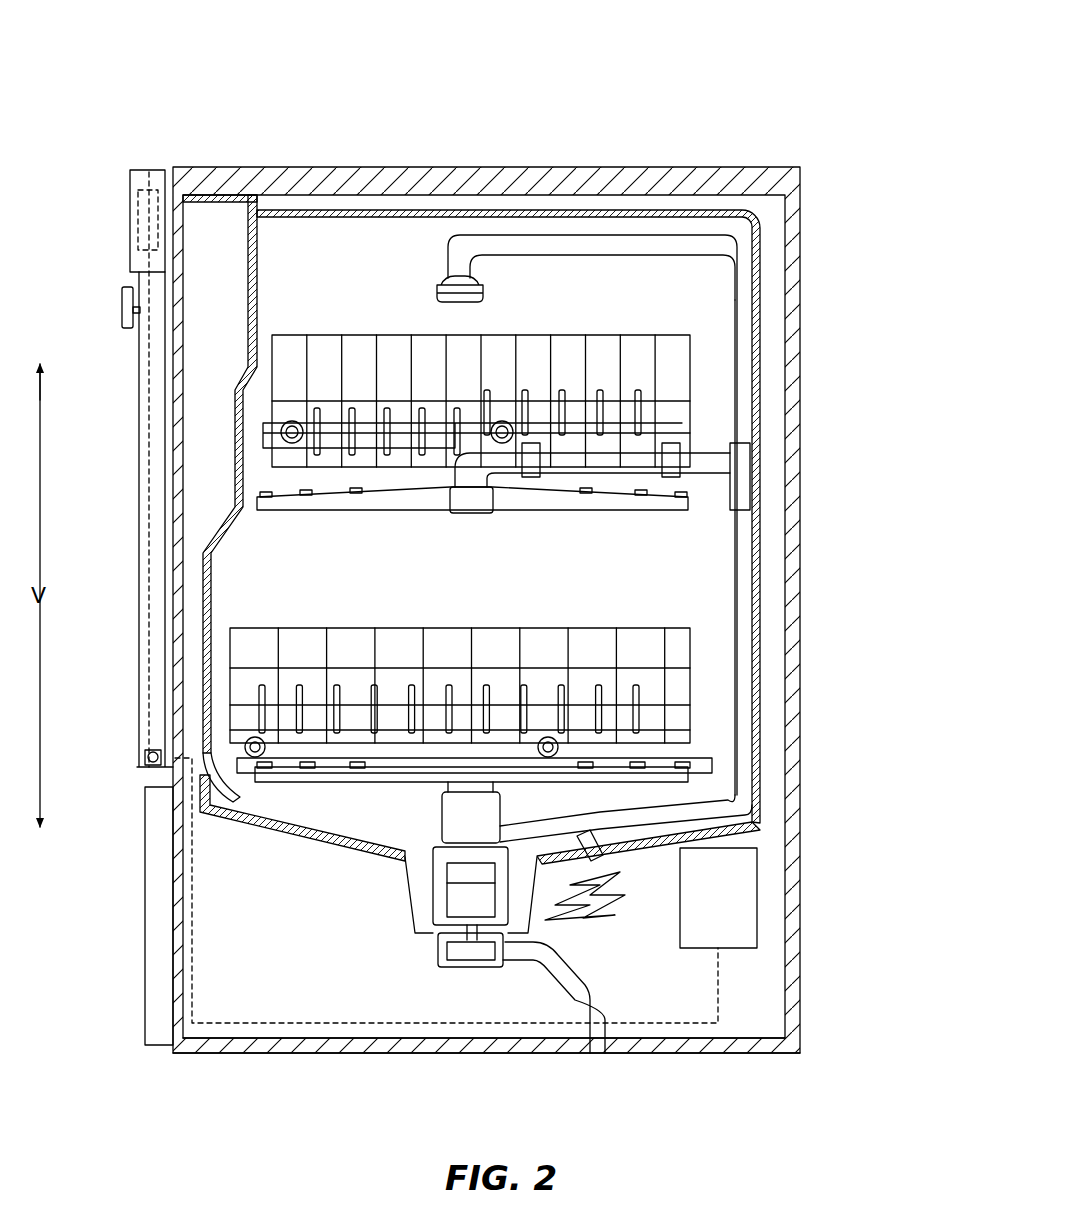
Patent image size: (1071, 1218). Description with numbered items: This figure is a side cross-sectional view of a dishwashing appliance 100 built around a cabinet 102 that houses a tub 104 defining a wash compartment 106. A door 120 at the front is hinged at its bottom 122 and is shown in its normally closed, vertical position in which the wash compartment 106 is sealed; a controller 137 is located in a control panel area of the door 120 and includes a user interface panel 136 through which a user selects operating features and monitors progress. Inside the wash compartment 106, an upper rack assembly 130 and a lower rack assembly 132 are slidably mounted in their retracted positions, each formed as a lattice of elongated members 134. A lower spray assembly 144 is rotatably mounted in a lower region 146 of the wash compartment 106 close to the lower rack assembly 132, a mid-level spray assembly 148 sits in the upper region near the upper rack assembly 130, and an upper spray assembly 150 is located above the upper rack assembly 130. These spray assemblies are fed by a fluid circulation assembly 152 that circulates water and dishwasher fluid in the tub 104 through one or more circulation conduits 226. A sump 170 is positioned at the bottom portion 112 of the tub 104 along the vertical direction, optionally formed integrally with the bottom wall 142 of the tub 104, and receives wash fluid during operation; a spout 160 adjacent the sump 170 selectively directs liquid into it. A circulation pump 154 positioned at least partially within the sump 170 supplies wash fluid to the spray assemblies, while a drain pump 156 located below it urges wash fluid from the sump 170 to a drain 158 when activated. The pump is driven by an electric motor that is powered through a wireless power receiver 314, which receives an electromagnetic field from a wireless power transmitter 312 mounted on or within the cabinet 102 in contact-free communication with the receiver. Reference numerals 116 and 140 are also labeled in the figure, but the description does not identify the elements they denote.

The dishwashing appliance 100 is at (474, 601).
The cabinet 102 is at (646, 90).
The tub 104 is at (765, 580).
The wash compartment 106 is at (254, 575).
The bottom portion 112 is at (258, 915).
The bottom of cabinet 116 is at (791, 1072).
The door 120 is at (140, 650).
The bottom of door 122 is at (165, 760).
The rack assembly 130 is at (330, 316).
The rack assembly 132 is at (533, 627).
The elongated members 134 is at (360, 395).
The user interface panel 136 is at (120, 298).
The controller 137 is at (132, 207).
The sump portion 140 is at (311, 1030).
The bottom wall 142 is at (712, 847).
The lower spray assembly 144 is at (343, 775).
The lower region 146 is at (720, 797).
The mid-level spray assembly 148 is at (505, 510).
The upper spray assembly 150 is at (482, 303).
The fluid circulation assembly 152 is at (744, 316).
The circulation pump 154 is at (457, 897).
The drain pump 156 is at (438, 950).
The drain 158 is at (601, 1074).
The spout 160 is at (600, 850).
The sump 170 is at (392, 899).
The circulation conduits 226 is at (746, 738).
The wireless power transmitter 312 is at (735, 900).
The wireless power receiver 314 is at (470, 870).